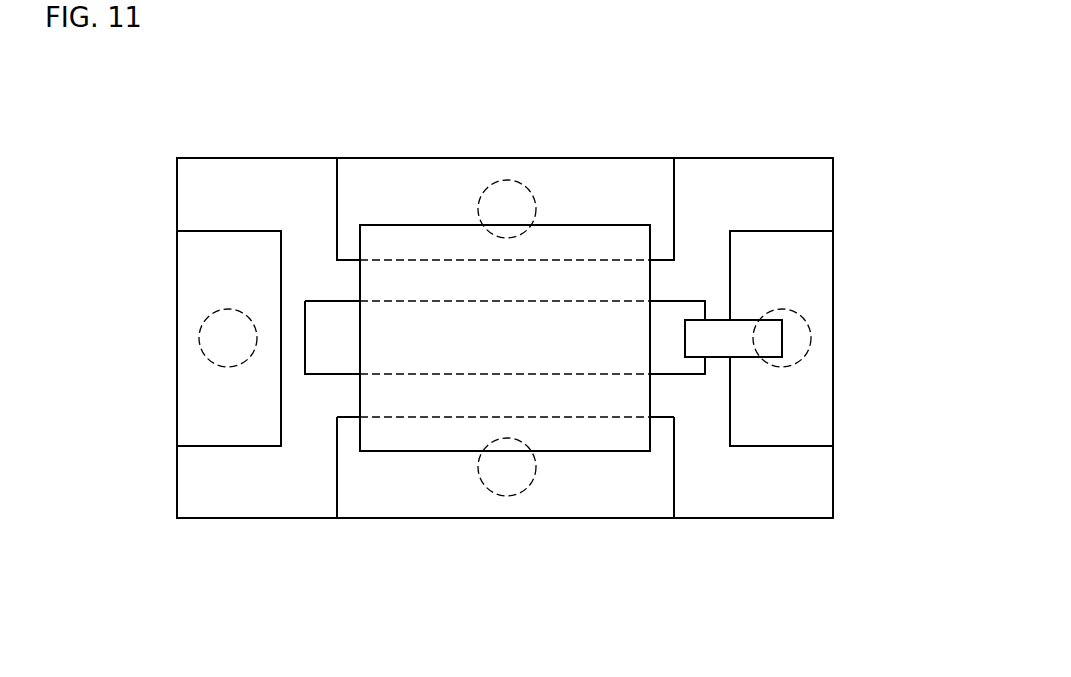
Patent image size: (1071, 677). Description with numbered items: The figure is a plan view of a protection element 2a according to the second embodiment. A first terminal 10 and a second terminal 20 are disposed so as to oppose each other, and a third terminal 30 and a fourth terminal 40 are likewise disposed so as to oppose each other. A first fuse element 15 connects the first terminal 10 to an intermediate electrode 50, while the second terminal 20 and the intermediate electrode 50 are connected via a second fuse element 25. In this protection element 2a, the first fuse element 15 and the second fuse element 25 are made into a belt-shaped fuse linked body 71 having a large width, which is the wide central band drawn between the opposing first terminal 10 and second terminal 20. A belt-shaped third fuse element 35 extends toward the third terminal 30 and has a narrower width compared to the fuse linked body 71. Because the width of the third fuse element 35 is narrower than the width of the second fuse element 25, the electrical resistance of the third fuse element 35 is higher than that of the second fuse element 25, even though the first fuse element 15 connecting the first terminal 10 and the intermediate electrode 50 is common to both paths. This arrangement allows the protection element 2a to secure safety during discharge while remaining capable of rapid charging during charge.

The protection element 2a is at (828, 115).
The first terminal 10 is at (340, 150).
The first fuse element 15 is at (625, 240).
The second terminal 20 is at (373, 528).
The second fuse element 25 is at (568, 438).
The third terminal 30 is at (845, 245).
The third fuse element 35 is at (715, 330).
The fourth terminal 40 is at (166, 411).
The intermediate electrode 50 is at (687, 365).
The fuse linked body 71 is at (545, 215).